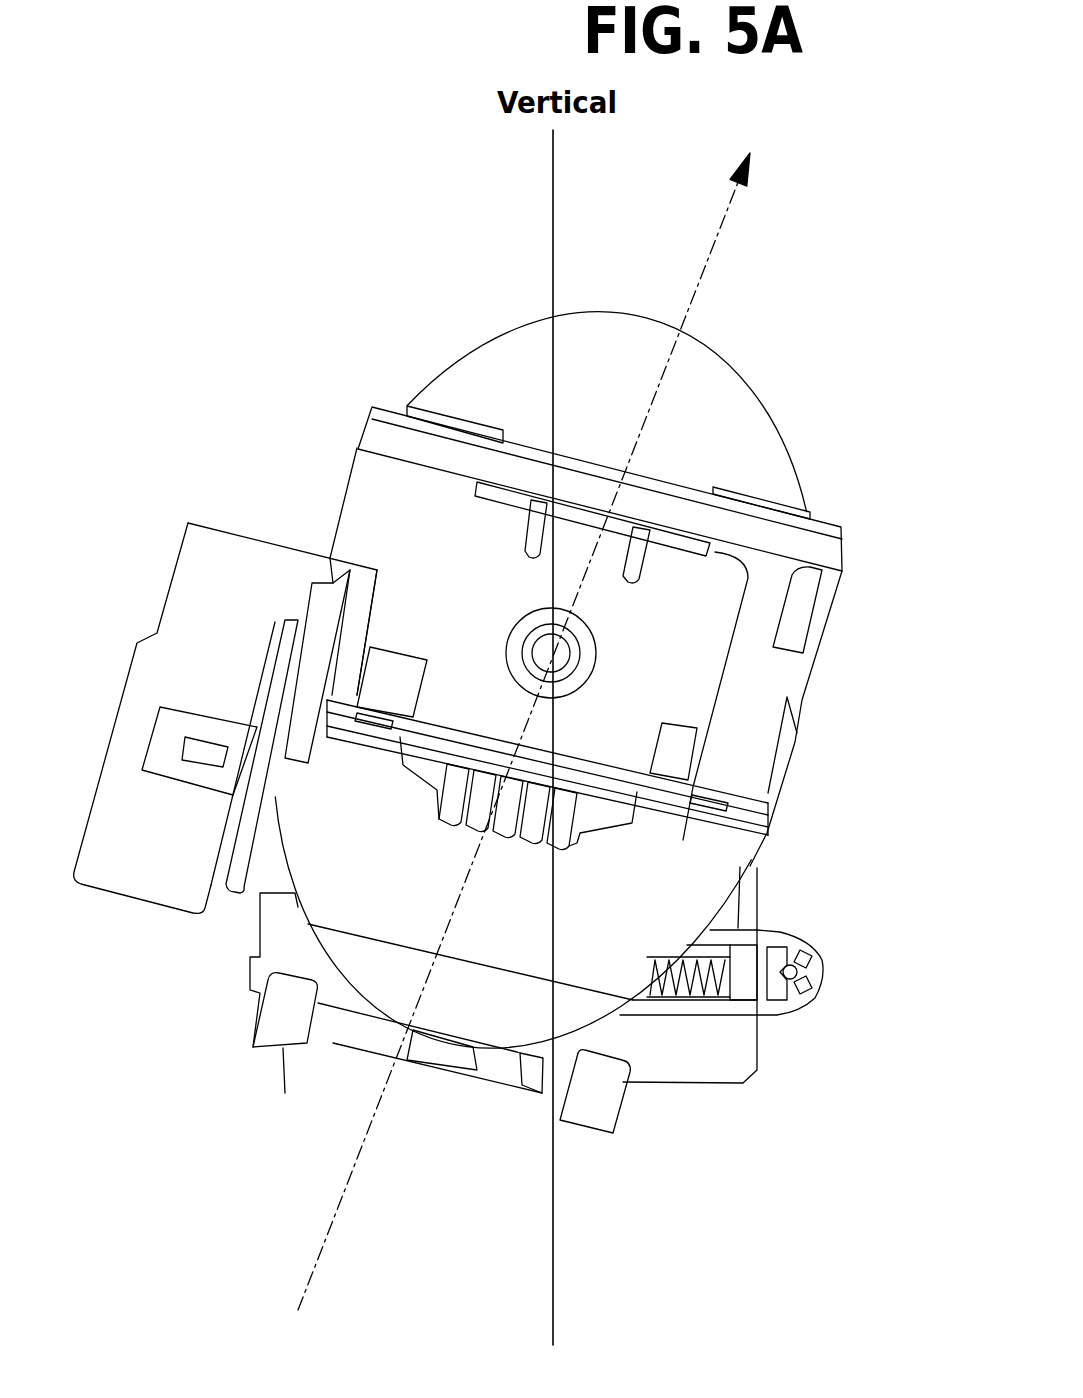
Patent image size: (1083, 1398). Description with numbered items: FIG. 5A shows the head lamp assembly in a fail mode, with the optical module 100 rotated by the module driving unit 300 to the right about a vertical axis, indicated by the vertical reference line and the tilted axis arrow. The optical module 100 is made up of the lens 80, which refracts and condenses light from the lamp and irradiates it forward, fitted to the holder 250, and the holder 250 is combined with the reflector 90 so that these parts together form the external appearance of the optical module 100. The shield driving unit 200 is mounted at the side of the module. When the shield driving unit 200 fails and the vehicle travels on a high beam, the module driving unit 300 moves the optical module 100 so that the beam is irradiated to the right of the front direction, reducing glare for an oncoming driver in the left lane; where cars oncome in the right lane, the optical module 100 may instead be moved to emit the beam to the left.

The optical module 100 is at (777, 341).
The lens 80 is at (752, 443).
The reflector 90 is at (737, 848).
The holder 250 is at (372, 520).
The shield driving unit 200 is at (227, 603).
The module driving unit 300 is at (720, 1020).